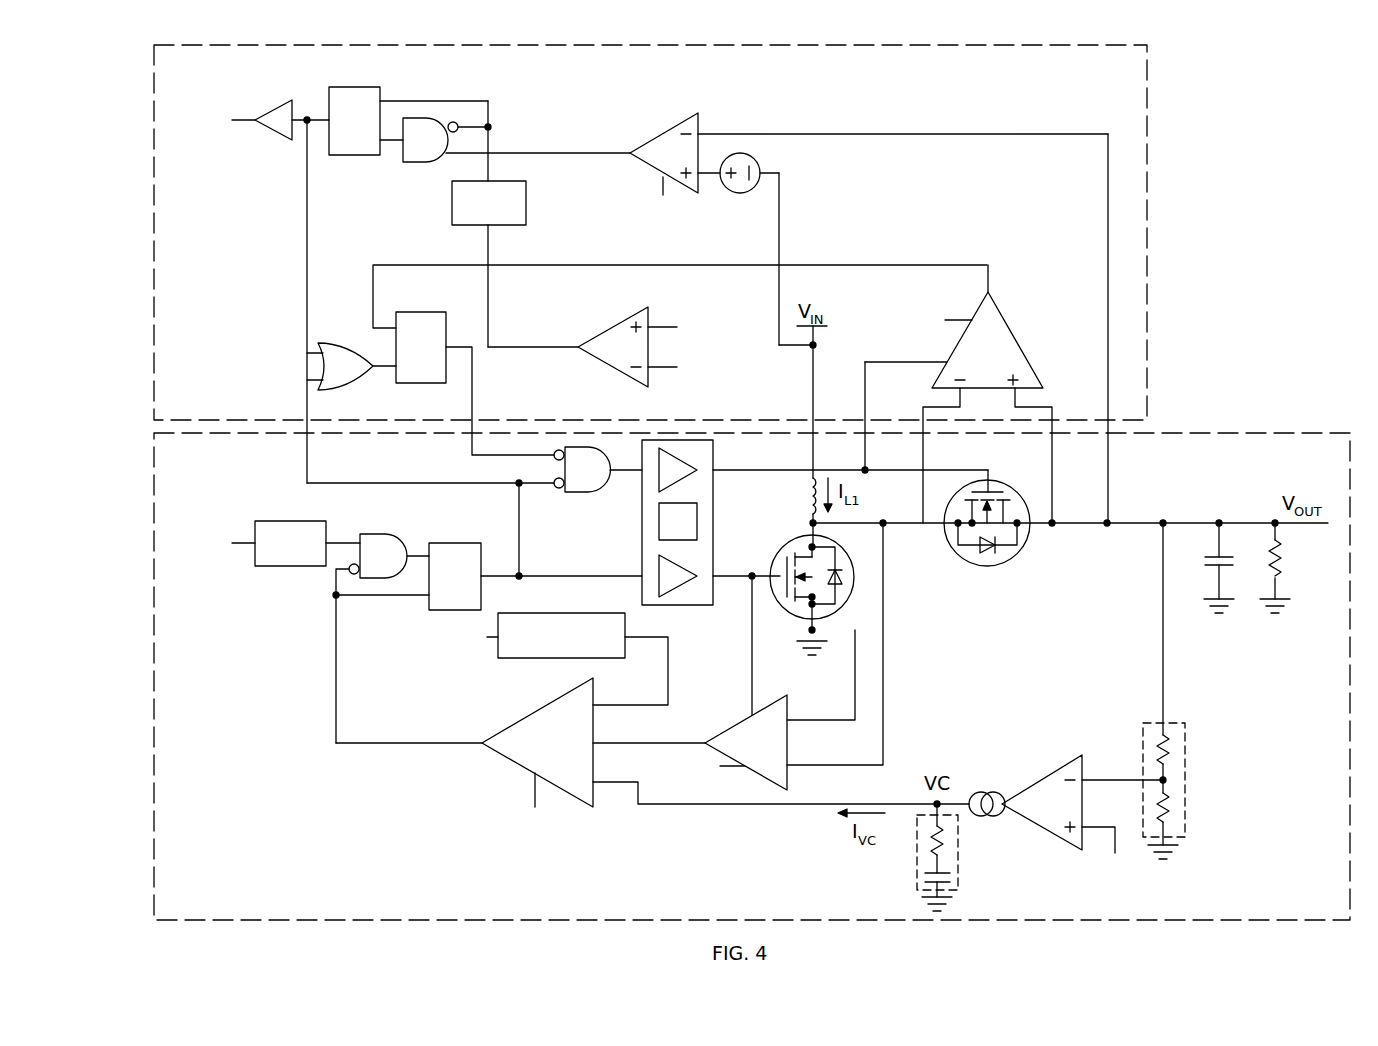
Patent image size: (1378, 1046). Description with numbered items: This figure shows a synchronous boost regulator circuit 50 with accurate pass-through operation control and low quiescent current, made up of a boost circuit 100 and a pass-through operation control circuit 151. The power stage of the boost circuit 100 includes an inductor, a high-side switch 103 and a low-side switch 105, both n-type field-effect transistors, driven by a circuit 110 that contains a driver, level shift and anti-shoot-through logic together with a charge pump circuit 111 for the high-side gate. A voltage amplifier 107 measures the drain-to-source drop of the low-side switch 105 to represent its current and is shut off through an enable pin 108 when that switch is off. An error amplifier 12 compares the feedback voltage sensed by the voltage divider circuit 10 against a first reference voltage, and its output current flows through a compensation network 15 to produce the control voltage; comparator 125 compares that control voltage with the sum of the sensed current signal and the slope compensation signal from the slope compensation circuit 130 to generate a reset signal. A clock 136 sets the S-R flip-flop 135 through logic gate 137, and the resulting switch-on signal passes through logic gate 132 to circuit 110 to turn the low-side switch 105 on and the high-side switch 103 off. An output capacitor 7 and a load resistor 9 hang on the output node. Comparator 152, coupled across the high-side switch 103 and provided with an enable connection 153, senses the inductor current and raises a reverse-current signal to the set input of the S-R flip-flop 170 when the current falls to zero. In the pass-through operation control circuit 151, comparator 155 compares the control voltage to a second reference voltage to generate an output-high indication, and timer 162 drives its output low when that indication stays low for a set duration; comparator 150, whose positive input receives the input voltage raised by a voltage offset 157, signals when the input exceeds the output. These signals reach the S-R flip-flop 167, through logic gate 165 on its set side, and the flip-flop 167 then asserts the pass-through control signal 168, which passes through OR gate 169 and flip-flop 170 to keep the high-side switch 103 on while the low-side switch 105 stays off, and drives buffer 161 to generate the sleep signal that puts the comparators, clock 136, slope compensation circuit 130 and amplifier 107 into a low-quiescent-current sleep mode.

The synchronous boost regulator circuit 50 is at (1325, 70).
The boost circuit 100 is at (1240, 433).
The pass-through operation control circuit 151 is at (1147, 221).
The buffer 161 is at (272, 108).
The S-R flip-flop 167 is at (356, 87).
The NAND gate 165 is at (421, 162).
The timer 162 is at (452, 201).
The comparator 150 is at (663, 128).
The voltage offset 157 is at (740, 194).
The PASSTHROUGH control signal 168 is at (307, 331).
The OR gate 169 is at (338, 343).
The S-R flip-flop 170 is at (420, 312).
The comparator 155 is at (612, 373).
The enable line 153 is at (907, 362).
The comparator 152 is at (1022, 338).
The clock 136 is at (290, 521).
The logic gate 137 is at (388, 534).
The S-R flip-flop 135 is at (452, 543).
The logic gate 132 is at (578, 492).
The driver circuit 110 is at (752, 522).
The charge pump circuit 111 is at (659, 522).
The low-side switch 105 is at (786, 545).
The high-side switch 103 is at (1012, 556).
The slope compensation circuit 130 is at (550, 613).
The comparator 125 is at (538, 710).
The enable pin 108 is at (752, 668).
The voltage amplifier 107 is at (735, 722).
The error amplifier circuit 12 is at (1040, 776).
The voltage divider circuit 10 is at (1185, 784).
The compensation network 15 is at (958, 852).
The capacitor 7 is at (1228, 575).
The resistor 9 is at (1283, 575).